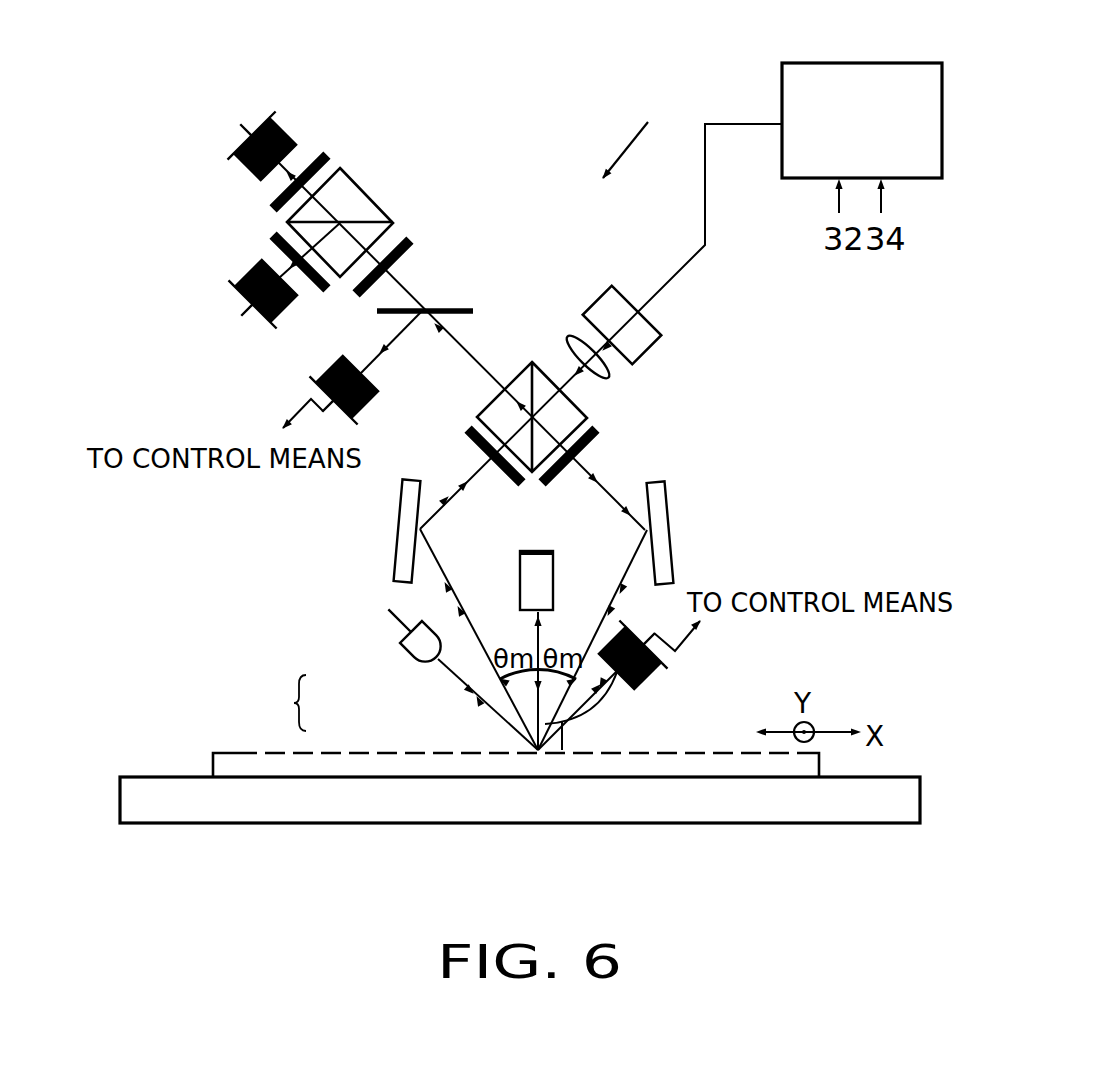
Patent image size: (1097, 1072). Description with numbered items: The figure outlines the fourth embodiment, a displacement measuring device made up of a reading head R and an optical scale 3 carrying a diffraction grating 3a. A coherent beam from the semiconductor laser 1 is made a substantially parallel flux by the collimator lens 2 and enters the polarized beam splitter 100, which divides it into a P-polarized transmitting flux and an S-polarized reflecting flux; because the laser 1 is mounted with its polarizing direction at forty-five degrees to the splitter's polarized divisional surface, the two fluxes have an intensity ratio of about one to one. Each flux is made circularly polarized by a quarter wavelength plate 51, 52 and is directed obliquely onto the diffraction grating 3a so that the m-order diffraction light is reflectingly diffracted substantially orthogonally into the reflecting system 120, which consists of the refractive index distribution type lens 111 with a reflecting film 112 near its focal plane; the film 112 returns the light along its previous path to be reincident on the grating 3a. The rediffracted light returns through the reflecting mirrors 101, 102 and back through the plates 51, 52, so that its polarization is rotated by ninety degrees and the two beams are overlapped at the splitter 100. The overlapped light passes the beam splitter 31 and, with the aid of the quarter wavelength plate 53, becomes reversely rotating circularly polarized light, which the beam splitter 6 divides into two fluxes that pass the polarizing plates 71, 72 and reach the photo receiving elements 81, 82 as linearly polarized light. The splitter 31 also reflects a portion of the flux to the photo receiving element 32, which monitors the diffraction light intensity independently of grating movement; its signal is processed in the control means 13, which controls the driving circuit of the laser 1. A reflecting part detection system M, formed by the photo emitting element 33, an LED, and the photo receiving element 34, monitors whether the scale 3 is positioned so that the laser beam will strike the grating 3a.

The semiconductor laser 1 is at (655, 330).
The collimator lens 2 is at (600, 376).
The optical scale 3 is at (785, 812).
The diffraction grating 3a is at (700, 752).
The beam splitter 6 is at (362, 198).
The control means 13 is at (866, 62).
The beam splitter 31 is at (467, 310).
The photo receiving element 32 is at (323, 368).
The photo emitting element 33 is at (407, 647).
The photo receiving element 34 is at (562, 722).
The quarter wavelength plate 51 is at (598, 437).
The quarter wavelength plate 52 is at (468, 437).
The quarter wavelength plate 53 is at (413, 240).
The polarizing plate 71 is at (323, 153).
The polarizing plate 72 is at (275, 230).
The photo receiving element 81 is at (283, 139).
The photo receiving element 82 is at (248, 275).
The polarized beam splitter 100 is at (540, 378).
The reflecting mirror 101 is at (672, 530).
The reflecting mirror 102 is at (395, 560).
The refractive index distribution type lens 111 is at (550, 582).
The reflecting film 112 is at (547, 549).
The reflecting system 120 is at (512, 583).
The reflecting part detection system M is at (288, 703).
The reading head R is at (633, 134).